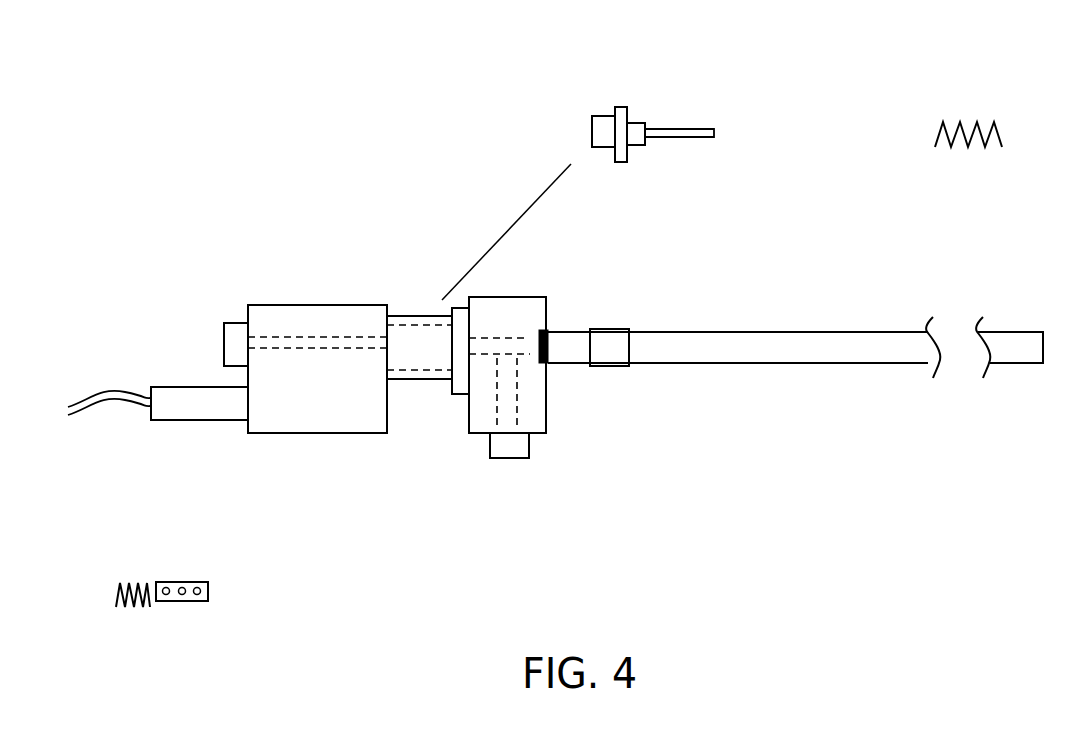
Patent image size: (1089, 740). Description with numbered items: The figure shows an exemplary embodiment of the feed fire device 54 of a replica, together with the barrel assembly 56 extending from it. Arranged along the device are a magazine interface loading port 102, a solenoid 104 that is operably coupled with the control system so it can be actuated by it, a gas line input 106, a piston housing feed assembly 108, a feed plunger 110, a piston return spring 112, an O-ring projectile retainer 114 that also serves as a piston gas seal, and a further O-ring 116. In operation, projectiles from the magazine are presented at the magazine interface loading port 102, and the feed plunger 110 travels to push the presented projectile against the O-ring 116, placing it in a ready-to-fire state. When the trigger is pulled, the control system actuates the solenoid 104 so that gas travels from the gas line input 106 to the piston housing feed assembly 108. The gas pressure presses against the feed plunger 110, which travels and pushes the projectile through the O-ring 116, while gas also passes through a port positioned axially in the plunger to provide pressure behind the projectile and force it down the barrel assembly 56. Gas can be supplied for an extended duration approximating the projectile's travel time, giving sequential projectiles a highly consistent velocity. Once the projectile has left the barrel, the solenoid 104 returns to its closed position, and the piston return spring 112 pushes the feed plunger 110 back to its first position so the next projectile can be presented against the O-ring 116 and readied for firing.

The feed fire device 54 is at (250, 470).
The barrel assembly 56 is at (833, 385).
The magazine interface loading port 102 is at (512, 468).
The solenoid 104 is at (158, 437).
The gas line input 106 is at (213, 333).
The piston housing feed assembly 108 is at (417, 302).
The feed plunger 110 is at (646, 91).
The piston return spring 112 is at (982, 153).
The O-ring projectile retainer 114 is at (552, 328).
The O-ring 116 is at (606, 159).